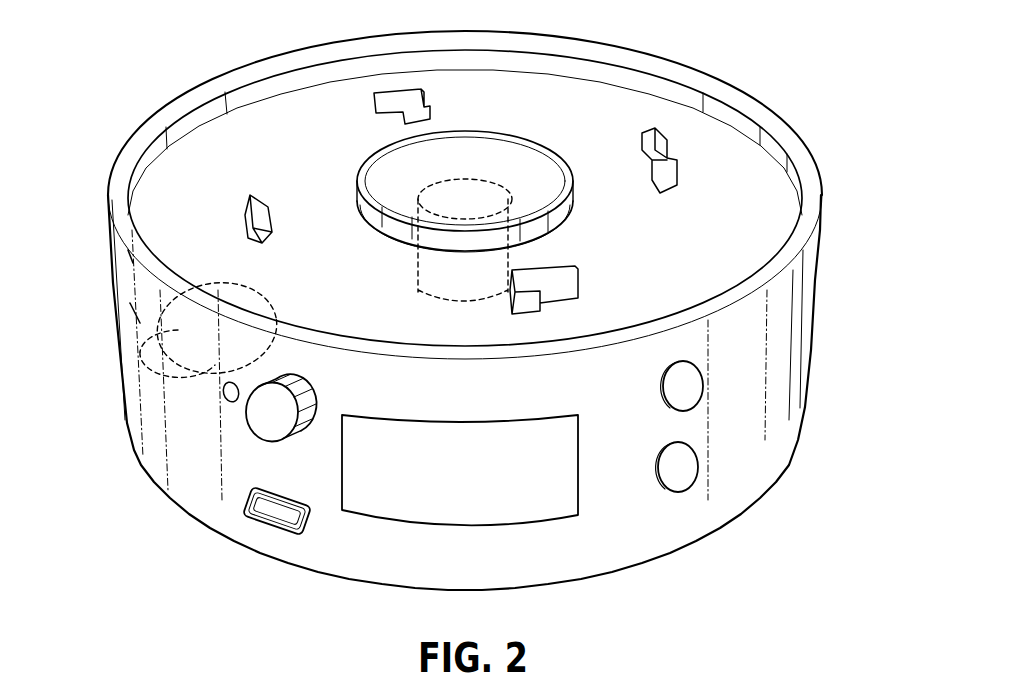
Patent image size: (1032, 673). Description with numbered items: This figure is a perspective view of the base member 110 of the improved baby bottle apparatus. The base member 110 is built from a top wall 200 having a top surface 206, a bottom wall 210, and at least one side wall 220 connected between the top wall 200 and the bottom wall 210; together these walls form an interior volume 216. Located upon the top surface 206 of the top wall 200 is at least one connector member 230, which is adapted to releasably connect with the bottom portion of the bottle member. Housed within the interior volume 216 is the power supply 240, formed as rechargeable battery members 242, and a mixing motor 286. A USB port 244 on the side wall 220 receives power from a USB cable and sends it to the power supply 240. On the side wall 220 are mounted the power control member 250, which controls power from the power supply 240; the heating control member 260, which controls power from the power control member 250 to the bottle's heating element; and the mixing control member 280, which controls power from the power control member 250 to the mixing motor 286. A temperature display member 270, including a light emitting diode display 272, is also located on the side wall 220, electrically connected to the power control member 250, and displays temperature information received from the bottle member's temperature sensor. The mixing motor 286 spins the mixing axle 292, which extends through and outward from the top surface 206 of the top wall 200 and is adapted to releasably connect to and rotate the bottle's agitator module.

The base member 110 is at (800, 326).
The top wall 200 is at (812, 178).
The top surface 206 is at (723, 185).
The bottom wall 210 is at (757, 502).
The interior volume 216 is at (140, 322).
The side wall 220 is at (135, 268).
The connector member 230 is at (257, 192).
The power supply 240 is at (185, 397).
The battery members 242 is at (150, 370).
The USB port 244 is at (292, 528).
The power control member 250 is at (273, 425).
The heating control member 260 is at (703, 390).
The temperature display member 270 is at (568, 498).
The light emitting diode display 272 is at (403, 490).
The mixing control member 280 is at (683, 468).
The mixing motor 286 is at (418, 298).
The mixing axle 292 is at (535, 173).